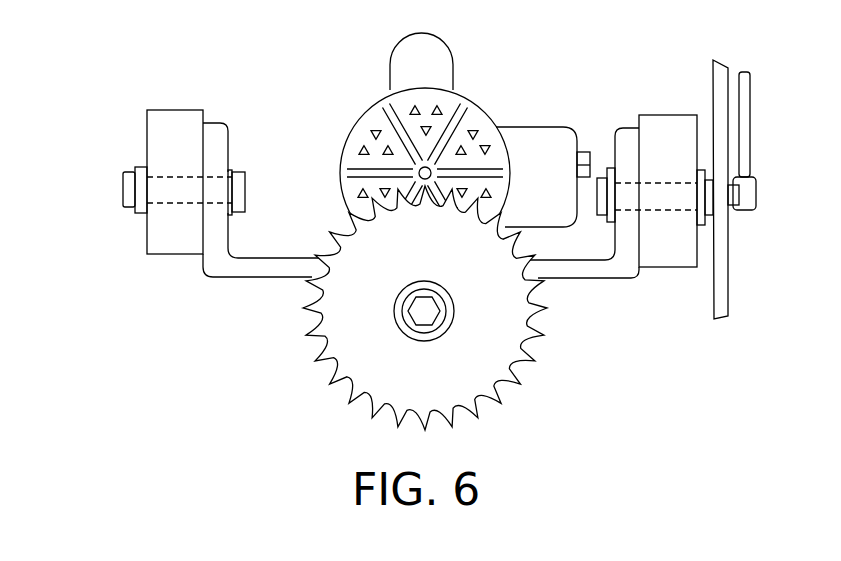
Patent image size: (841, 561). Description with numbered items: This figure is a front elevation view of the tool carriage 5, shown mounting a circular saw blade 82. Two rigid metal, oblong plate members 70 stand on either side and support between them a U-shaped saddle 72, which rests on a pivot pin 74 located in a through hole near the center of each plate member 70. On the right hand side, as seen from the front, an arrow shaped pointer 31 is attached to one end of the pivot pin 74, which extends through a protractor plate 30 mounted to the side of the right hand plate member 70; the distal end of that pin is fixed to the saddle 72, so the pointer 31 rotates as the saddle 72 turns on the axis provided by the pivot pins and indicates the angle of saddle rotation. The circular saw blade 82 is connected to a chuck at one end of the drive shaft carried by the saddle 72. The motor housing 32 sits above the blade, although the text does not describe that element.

The tool carriage 5 is at (98, 96).
The protractor plate 30 is at (722, 63).
The pointer 31 is at (750, 118).
The motor 32 is at (463, 106).
The plate member 70 is at (192, 110).
The saddle 72 is at (250, 256).
The pivot pin 74 is at (124, 192).
The circular saw blade 82 is at (540, 352).